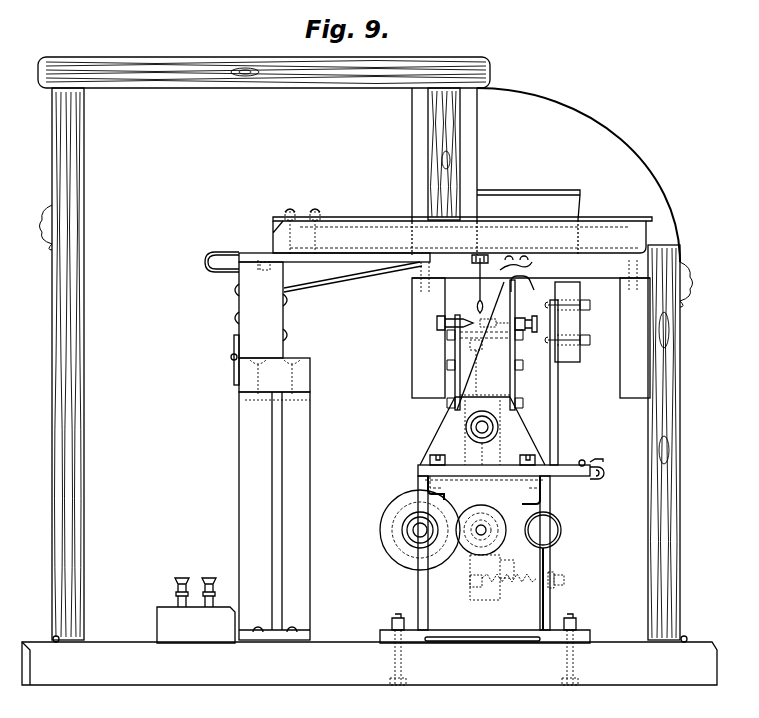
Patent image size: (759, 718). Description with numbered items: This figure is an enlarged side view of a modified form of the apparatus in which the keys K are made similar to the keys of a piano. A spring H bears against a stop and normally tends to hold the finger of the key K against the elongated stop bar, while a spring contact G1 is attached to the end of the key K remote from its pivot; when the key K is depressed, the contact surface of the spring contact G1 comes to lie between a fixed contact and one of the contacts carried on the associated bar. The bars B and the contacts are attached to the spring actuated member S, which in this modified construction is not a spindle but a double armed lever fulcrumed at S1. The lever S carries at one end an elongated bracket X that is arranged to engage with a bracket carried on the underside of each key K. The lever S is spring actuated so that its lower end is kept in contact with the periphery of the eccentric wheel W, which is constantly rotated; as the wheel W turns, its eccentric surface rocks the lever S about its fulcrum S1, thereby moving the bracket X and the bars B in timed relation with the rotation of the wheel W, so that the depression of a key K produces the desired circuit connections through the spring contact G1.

The key K is at (518, 203).
The spring H is at (353, 277).
The pointer G is at (478, 284).
The spring contact G1 is at (440, 322).
The elongated bracket X is at (523, 285).
The bar B is at (522, 331).
The double armed lever S is at (497, 462).
The fulcrum S1 is at (470, 425).
The eccentric wheel W is at (425, 548).